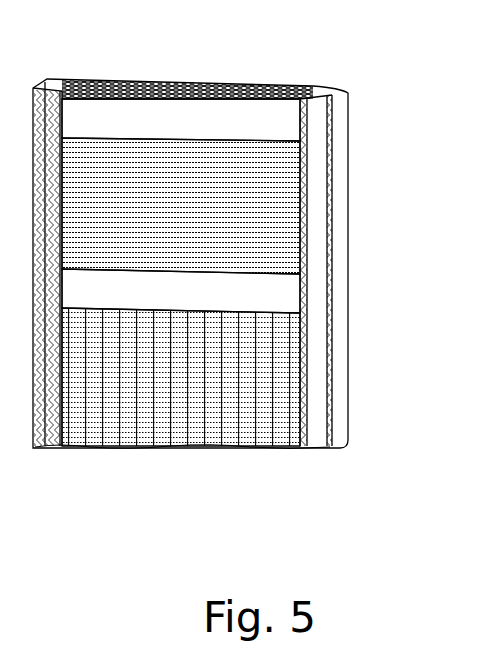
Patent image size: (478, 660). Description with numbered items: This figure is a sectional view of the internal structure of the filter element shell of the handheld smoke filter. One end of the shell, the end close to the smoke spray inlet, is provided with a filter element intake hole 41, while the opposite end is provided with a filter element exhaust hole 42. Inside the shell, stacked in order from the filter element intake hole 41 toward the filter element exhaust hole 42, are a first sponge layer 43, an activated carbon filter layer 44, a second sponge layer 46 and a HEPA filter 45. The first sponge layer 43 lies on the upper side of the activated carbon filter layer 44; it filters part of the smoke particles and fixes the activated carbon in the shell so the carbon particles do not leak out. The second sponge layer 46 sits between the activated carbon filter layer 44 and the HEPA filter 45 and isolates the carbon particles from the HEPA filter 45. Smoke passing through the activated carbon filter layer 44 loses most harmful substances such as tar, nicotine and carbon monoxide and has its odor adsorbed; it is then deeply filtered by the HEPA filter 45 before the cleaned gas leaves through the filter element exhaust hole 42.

The filter element intake hole 41 is at (320, 84).
The filter element exhaust hole 42 is at (292, 452).
The first sponge layer 43 is at (292, 128).
The activated carbon filter layer 44 is at (292, 222).
The HEPA filter 45 is at (292, 395).
The second sponge layer 46 is at (292, 300).